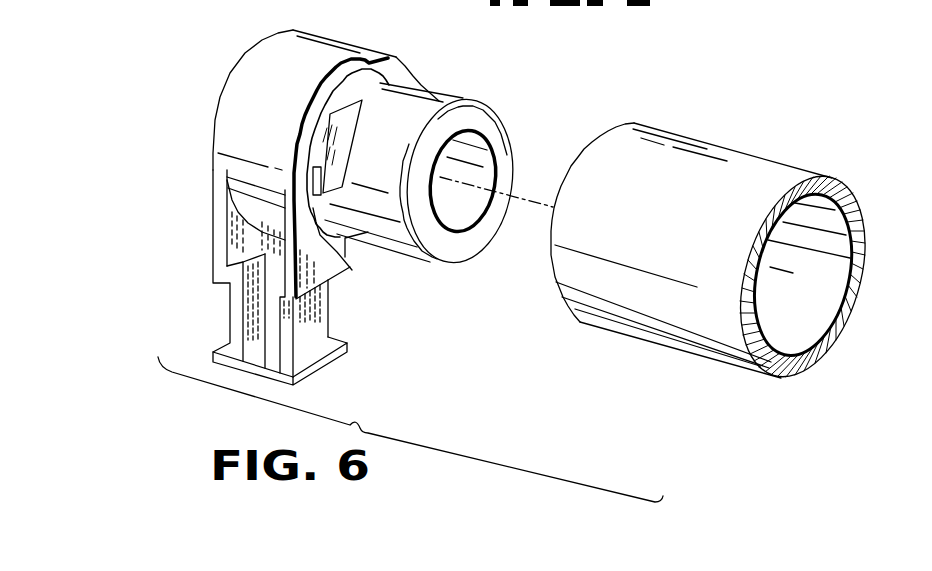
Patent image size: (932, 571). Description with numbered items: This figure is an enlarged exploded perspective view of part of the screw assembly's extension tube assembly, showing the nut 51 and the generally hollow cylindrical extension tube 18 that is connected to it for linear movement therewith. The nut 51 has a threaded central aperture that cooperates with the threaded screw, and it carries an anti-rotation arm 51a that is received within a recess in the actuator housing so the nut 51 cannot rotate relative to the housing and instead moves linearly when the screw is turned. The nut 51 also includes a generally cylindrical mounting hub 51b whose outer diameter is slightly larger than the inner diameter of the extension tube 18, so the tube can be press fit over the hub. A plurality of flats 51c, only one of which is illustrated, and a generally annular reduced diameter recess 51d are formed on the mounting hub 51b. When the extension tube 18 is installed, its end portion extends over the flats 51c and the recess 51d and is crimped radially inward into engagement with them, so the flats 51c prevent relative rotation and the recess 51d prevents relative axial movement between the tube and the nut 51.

The extension tube 18 is at (773, 178).
The nut 51 is at (260, 61).
The anti-rotation arm 51a is at (233, 327).
The mounting hub 51b is at (443, 100).
The flats 51c is at (335, 143).
The reduced diameter recess 51d is at (352, 88).